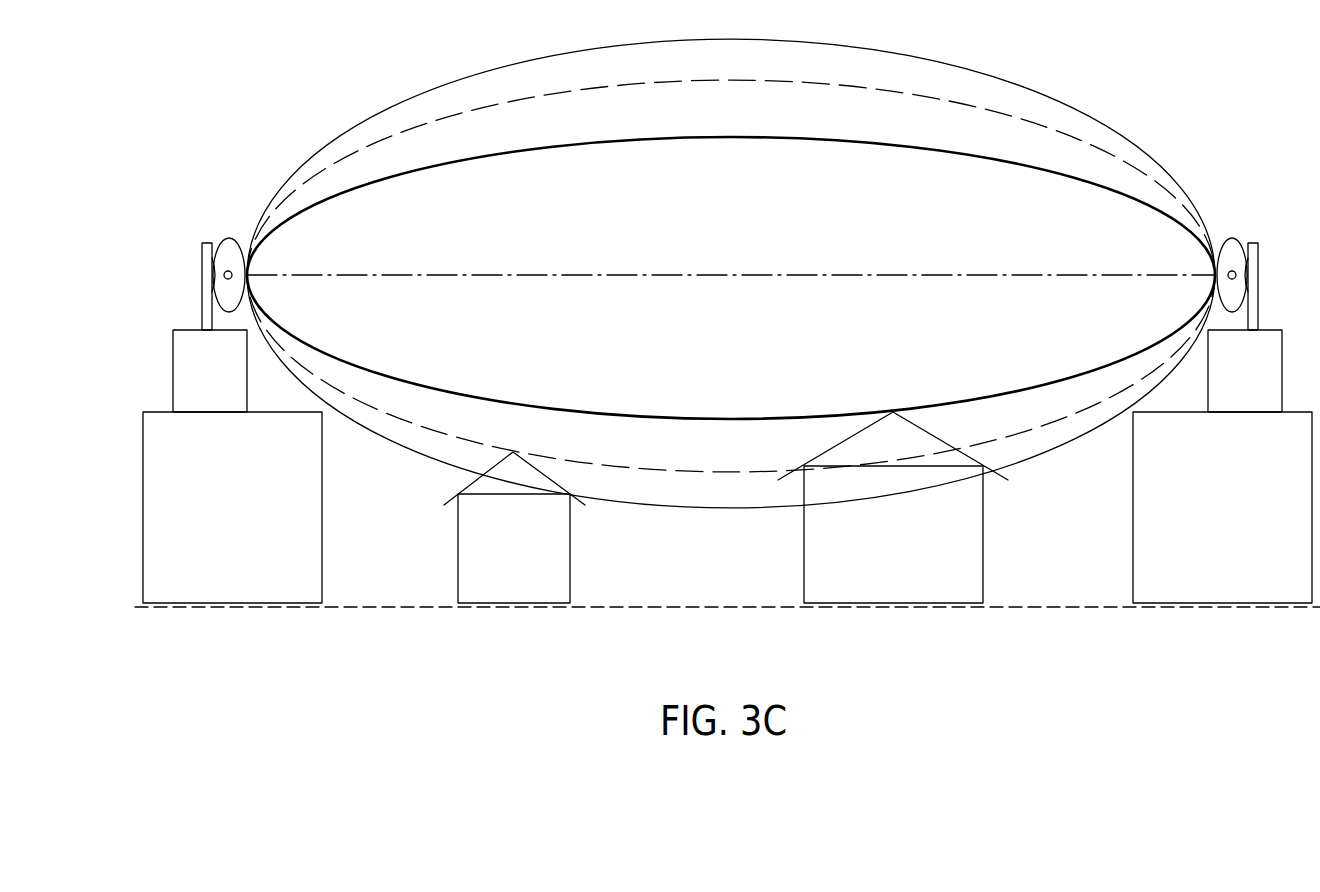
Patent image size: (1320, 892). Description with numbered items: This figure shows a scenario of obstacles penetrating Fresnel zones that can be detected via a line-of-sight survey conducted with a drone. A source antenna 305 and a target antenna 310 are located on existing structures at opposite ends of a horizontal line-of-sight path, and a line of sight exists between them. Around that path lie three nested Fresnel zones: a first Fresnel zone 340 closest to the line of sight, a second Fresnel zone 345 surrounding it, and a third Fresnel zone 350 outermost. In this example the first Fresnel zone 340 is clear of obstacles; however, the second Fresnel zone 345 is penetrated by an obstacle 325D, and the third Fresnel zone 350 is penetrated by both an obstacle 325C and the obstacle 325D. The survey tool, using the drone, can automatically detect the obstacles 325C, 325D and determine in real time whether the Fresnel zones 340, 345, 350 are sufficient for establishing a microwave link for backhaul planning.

The source antenna 305 is at (228, 237).
The target antenna 310 is at (1233, 237).
The obstacle 325C is at (458, 541).
The obstacle 325D is at (804, 546).
The first Fresnel zone 340 is at (888, 153).
The second Fresnel zone 345 is at (778, 83).
The third Fresnel zone 350 is at (623, 52).